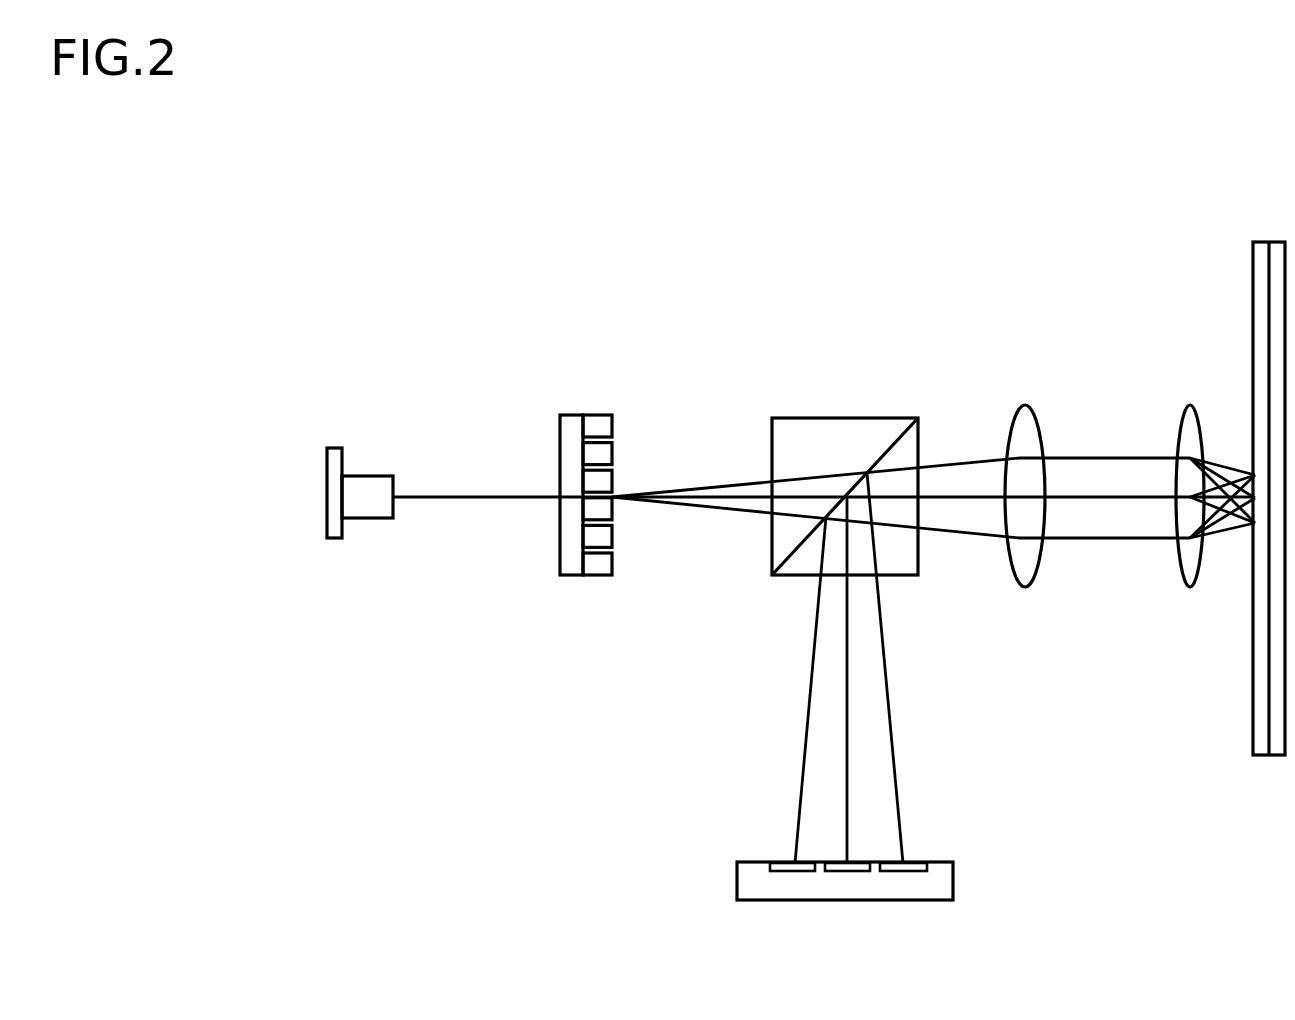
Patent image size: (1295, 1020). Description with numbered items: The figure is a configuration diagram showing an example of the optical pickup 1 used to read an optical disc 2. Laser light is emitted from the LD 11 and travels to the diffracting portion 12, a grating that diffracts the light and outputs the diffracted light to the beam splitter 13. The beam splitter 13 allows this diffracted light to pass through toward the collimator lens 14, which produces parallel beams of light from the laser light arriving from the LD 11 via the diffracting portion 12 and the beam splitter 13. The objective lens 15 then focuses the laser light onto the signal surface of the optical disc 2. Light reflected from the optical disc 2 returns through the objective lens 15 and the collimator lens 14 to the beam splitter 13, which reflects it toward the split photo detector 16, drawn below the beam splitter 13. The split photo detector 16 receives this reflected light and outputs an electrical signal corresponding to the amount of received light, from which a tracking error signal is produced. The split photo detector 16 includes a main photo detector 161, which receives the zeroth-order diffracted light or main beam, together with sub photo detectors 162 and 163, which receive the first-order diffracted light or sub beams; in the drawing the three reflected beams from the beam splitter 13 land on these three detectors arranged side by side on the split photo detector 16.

The optical pickup 1 is at (966, 291).
The optical disc 2 is at (1253, 684).
The LD 11 is at (368, 490).
The diffracting portion 12 is at (596, 415).
The beam splitter 13 is at (840, 418).
The collimator lens 14 is at (1025, 405).
The objective lens 15 is at (1190, 405).
The split photo detector 16 is at (878, 816).
The main photo detector 161 is at (842, 863).
The sub photo detector 162 is at (783, 863).
The sub photo detector 163 is at (917, 863).